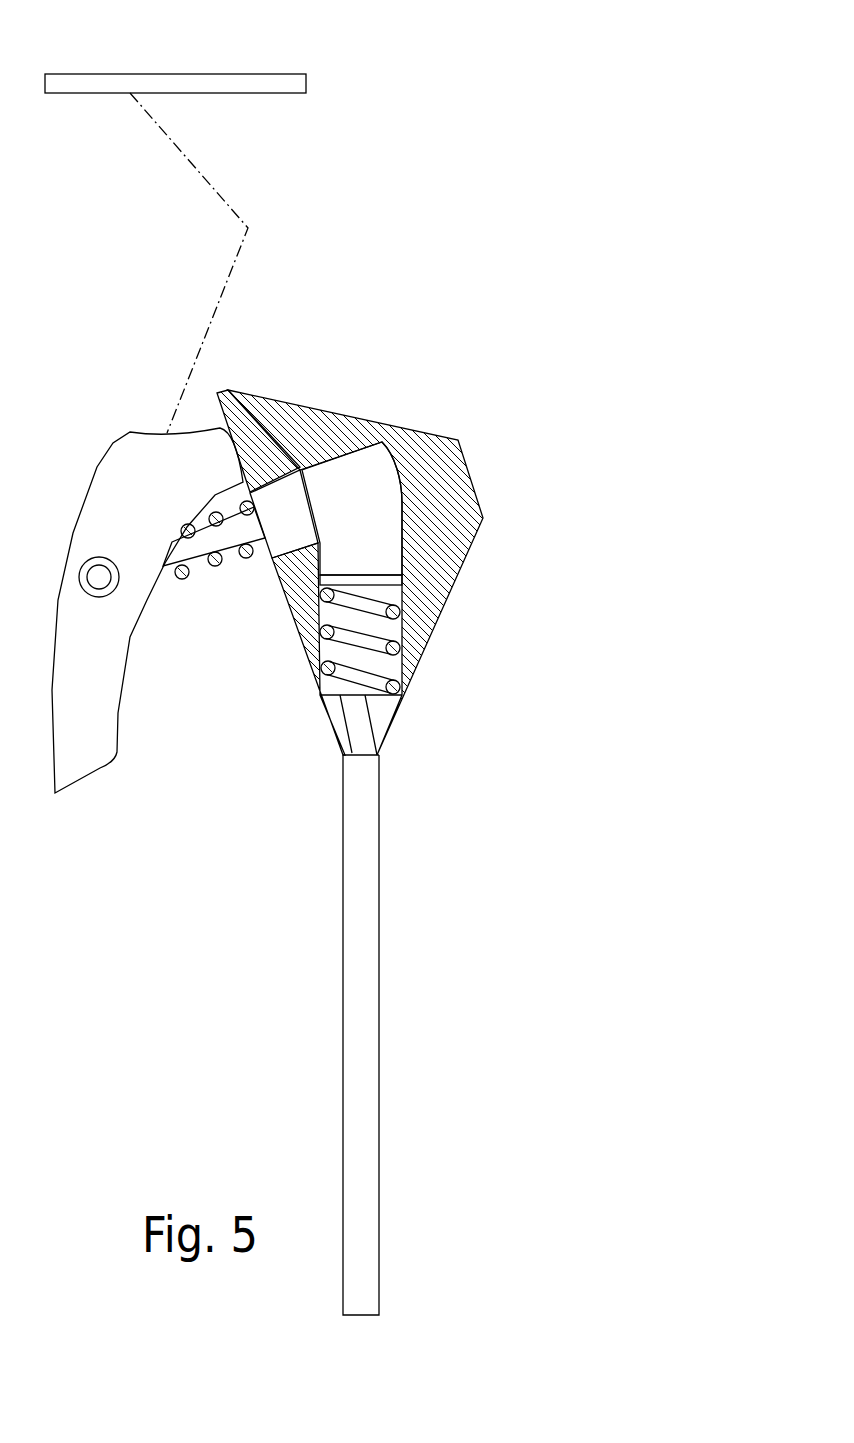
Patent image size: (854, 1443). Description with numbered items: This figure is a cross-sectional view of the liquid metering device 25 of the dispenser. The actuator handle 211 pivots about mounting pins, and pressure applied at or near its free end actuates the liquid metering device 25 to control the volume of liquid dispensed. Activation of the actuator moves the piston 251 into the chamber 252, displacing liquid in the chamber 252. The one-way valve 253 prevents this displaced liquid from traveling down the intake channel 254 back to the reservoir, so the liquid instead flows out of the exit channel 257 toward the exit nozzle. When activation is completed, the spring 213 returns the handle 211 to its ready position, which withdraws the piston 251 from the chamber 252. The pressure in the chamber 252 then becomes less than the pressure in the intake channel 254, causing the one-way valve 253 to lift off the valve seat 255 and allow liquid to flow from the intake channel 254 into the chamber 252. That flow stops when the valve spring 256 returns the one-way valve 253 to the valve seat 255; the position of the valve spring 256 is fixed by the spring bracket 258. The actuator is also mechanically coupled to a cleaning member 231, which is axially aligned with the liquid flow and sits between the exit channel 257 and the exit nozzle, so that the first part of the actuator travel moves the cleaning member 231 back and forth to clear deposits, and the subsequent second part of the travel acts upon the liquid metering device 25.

The liquid metering device 25 is at (558, 401).
The cleaning member 231 is at (243, 74).
The actuator handle 211 is at (108, 657).
The spring 213 is at (218, 550).
The piston 251 is at (280, 537).
The chamber 252 is at (343, 470).
The one-way valve 253 is at (362, 747).
The intake channel 254 is at (360, 980).
The valve seat 255 is at (379, 753).
The valve spring 256 is at (392, 646).
The exit channel 257 is at (220, 390).
The spring bracket 258 is at (383, 575).